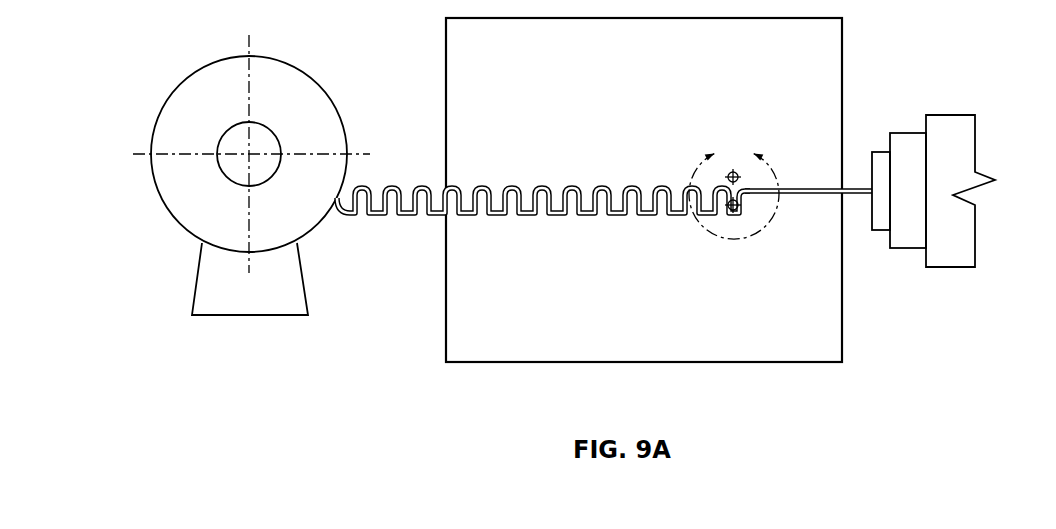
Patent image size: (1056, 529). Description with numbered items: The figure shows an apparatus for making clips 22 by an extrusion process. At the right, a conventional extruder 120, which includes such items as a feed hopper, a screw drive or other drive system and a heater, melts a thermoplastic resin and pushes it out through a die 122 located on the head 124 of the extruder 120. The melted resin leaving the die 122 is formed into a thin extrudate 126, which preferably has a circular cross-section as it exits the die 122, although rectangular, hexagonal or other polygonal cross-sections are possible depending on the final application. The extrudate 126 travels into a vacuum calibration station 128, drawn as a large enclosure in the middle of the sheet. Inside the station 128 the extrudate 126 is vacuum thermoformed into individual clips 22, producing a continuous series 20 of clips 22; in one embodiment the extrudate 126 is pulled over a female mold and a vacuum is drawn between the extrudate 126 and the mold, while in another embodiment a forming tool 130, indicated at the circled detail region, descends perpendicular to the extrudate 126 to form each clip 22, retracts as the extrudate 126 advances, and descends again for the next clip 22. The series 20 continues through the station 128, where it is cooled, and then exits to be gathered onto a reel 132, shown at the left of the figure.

The series of clips 20 is at (525, 148).
The clip 22 is at (660, 187).
The extruder 120 is at (957, 258).
The die 122 is at (882, 220).
The head 124 is at (908, 147).
The extrudate 126 is at (853, 187).
The vacuum calibration station 128 is at (565, 342).
The forming tool 130 is at (743, 228).
The reel 132 is at (198, 93).